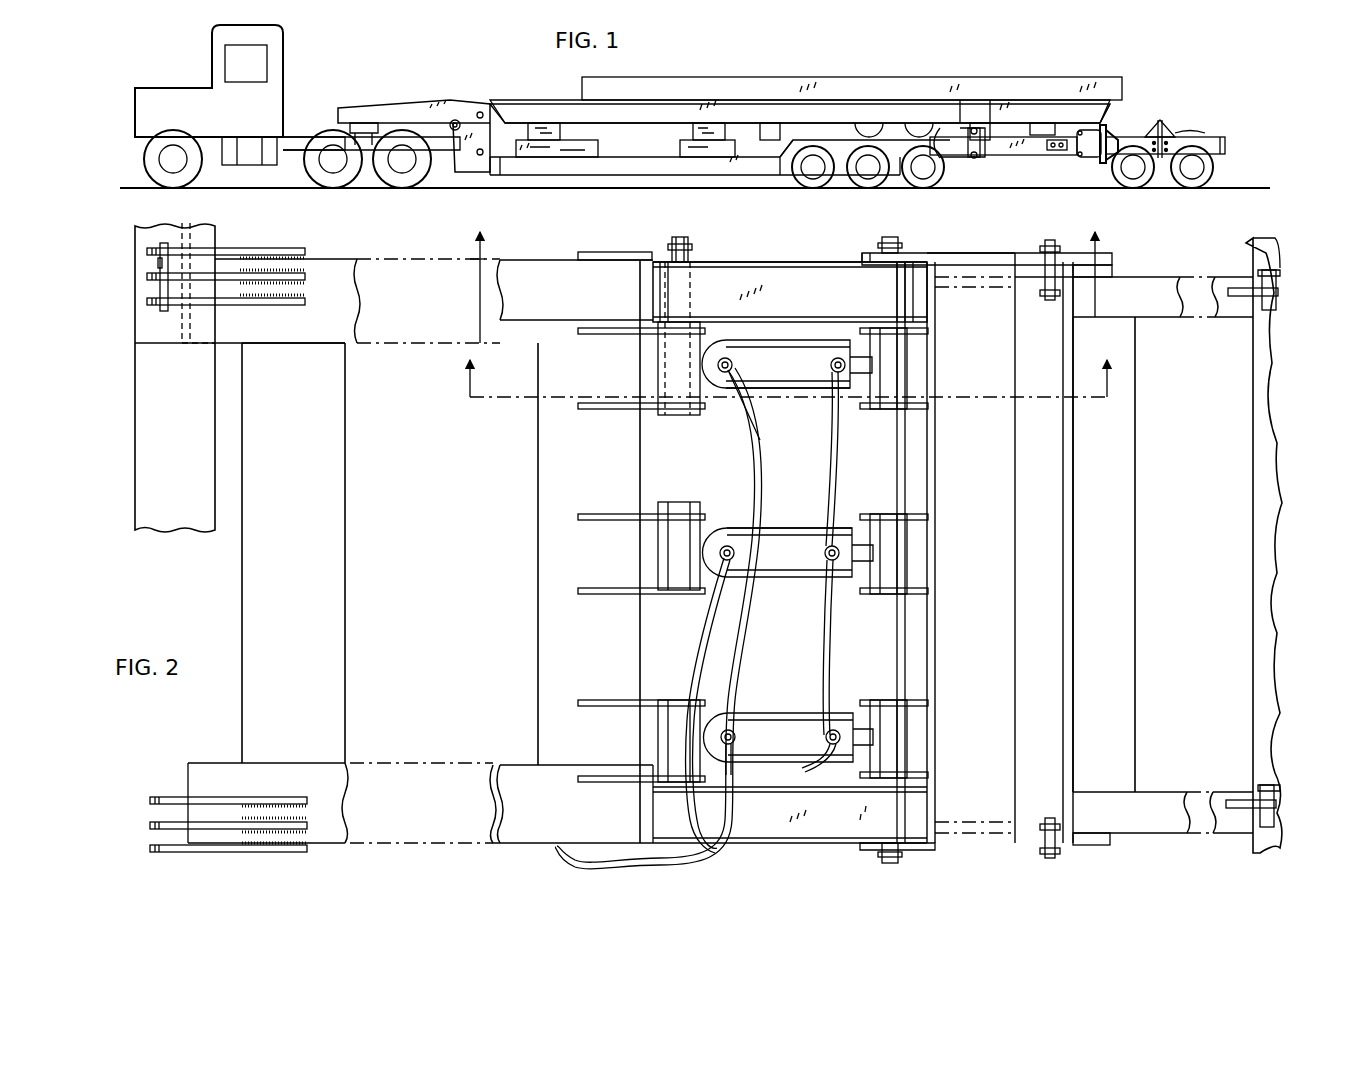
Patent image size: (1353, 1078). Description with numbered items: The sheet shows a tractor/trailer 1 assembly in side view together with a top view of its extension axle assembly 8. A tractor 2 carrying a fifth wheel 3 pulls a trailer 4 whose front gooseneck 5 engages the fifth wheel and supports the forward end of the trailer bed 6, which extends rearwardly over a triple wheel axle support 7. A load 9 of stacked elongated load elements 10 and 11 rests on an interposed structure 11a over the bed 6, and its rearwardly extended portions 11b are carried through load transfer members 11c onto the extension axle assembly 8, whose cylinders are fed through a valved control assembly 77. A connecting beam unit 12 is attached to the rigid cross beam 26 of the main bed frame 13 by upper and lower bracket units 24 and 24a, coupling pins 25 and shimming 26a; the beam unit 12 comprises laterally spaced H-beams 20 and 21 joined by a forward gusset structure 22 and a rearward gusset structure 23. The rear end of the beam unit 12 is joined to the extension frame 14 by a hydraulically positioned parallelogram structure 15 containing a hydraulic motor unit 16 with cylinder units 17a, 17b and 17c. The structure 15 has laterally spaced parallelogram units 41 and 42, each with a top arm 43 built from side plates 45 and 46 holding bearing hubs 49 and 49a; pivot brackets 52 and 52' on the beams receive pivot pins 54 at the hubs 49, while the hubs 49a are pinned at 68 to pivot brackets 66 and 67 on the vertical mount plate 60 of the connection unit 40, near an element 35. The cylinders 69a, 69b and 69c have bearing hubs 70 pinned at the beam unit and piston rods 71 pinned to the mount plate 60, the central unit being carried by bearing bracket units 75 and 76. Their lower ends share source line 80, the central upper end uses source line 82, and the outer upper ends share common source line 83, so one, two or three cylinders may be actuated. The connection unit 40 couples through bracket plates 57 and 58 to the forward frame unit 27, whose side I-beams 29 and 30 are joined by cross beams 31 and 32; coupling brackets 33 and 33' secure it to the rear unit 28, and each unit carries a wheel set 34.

In FIG. 1, the tractor/trailer assembly 1 is at (516, 72).
In FIG. 1, the tractor 2 is at (194, 108).
In FIG. 1, the trailer fifth wheel 3 is at (352, 127).
In FIG. 1, the trailer 4 is at (655, 178).
In FIG. 2, the trailer 4 is at (778, 279).
In FIG. 1, the front gooseneck 5 is at (404, 100).
In FIG. 2, the front gooseneck 5 is at (780, 371).
In FIG. 1, the trailer bed 6 is at (762, 140).
In FIG. 1, the triple wheel axle support unit 7 is at (955, 172).
In FIG. 1, the extension axle assembly 8 is at (1204, 115).
In FIG. 1, the load 9 is at (950, 90).
In FIG. 1, the load element 10 is at (737, 100).
In FIG. 1, the load element 11 is at (840, 77).
In FIG. 1, the interposed structure 11a is at (672, 142).
In FIG. 1, the rearwardly extended portion 11b is at (1060, 80).
In FIG. 1, the load transfer member 11c is at (1032, 125).
In FIG. 1, the connecting beam unit 12 is at (1030, 145).
In FIG. 2, the connecting beam unit 12 is at (240, 479).
In FIG. 1, the main bed frame 13 is at (950, 128).
In FIG. 2, the main bed frame 13 is at (130, 398).
In FIG. 1, the extension frame 14 is at (1116, 133).
In FIG. 1, the parallelogram structure 15 is at (1092, 154).
In FIG. 2, the hydraulic motor unit 16 is at (740, 435).
In FIG. 2, the hydraulic cylinder unit 17a is at (812, 388).
In FIG. 2, the hydraulic cylinder unit 17b is at (807, 522).
In FIG. 2, the hydraulic cylinder unit 17c is at (816, 696).
In FIG. 2, the H-beam 20 is at (357, 343).
In FIG. 2, the H-beam 21 is at (511, 763).
In FIG. 2, the strengthening gusset structure 22 is at (306, 577).
In FIG. 2, the gusset structure 23 is at (588, 566).
In FIG. 2, the upper connecting bracket unit 24 is at (240, 308).
In FIG. 2, the lower connecting bracket unit 24a is at (220, 790).
In FIG. 2, the coupling pin 25 is at (155, 292).
In FIG. 1, the rigid cross beam 26 is at (970, 143).
In FIG. 2, the rigid cross beam 26 is at (148, 347).
In FIG. 2, the shimming 26a is at (215, 238).
In FIG. 1, the forward unit 27 is at (1145, 160).
In FIG. 1, the rear unit 28 is at (1225, 148).
In FIG. 2, the side I-beam 29 is at (1157, 317).
In FIG. 2, the side I-beam 30 is at (1180, 770).
In FIG. 2, the cross beam 31 is at (1128, 494).
In FIG. 2, the rear cross beam 32 is at (1258, 547).
In FIG. 1, the coupling bracket 33 is at (1224, 107).
In FIG. 2, the coupling bracket 33 is at (1273, 265).
In FIG. 2, the bolt 33' is at (1280, 786).
In FIG. 1, the wheel set 34 is at (1126, 185).
In FIG. 2, the wheel set 34 is at (1275, 327).
In FIG. 2, the top plate 35 is at (971, 232).
In FIG. 2, the connection unit 40 is at (1000, 257).
In FIG. 2, the parallelogram unit 41 is at (825, 265).
In FIG. 2, the parallelogram unit 42 is at (765, 848).
In FIG. 2, the top arm 43 is at (737, 272).
In FIG. 2, the side plate 45 is at (770, 260).
In FIG. 2, the side plate 46 is at (792, 300).
In FIG. 2, the bearing hub member 49 is at (680, 250).
In FIG. 2, the bearing hub member 49a is at (870, 258).
In FIG. 2, the pivot bracket 52 is at (575, 293).
In FIG. 2, the pivot bracket 52' is at (575, 809).
In FIG. 2, the pivot pin 54 is at (678, 237).
In FIG. 2, the bracket plate 57 is at (1087, 840).
In FIG. 2, the bracket plate 58 is at (1105, 262).
In FIG. 2, the vertical mount plate 60 is at (933, 473).
In FIG. 2, the pivot bracket 66 is at (913, 260).
In FIG. 2, the pivot bracket 67 is at (915, 850).
In FIG. 2, the pin connection 68 is at (877, 250).
In FIG. 2, the cylinder 69a is at (798, 379).
In FIG. 2, the cylinder 69b is at (806, 564).
In FIG. 2, the cylinder 69c is at (797, 718).
In FIG. 2, the bearing hub 70 is at (665, 395).
In FIG. 2, the piston rod 71 is at (830, 425).
In FIG. 2, the bearing bracket unit 75 is at (673, 590).
In FIG. 2, the bearing bracket unit 76 is at (877, 595).
In FIG. 1, the valved control assembly 77 is at (1058, 140).
In FIG. 2, the source line 80 is at (830, 675).
In FIG. 2, the source line 82 is at (737, 638).
In FIG. 2, the common source line 83 is at (743, 428).